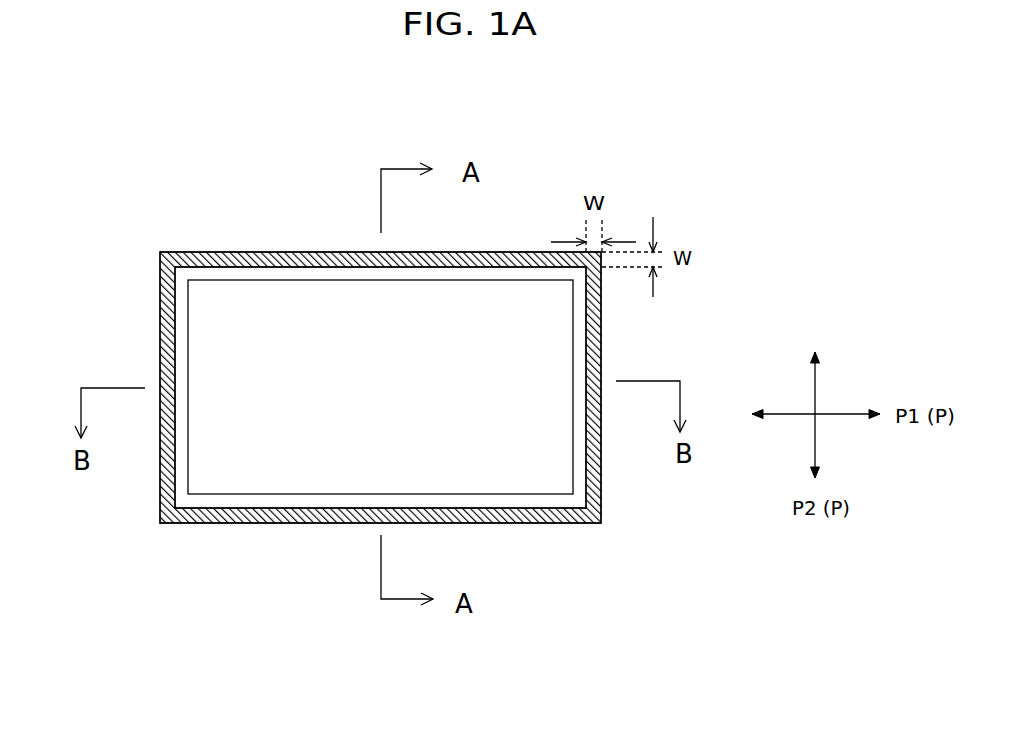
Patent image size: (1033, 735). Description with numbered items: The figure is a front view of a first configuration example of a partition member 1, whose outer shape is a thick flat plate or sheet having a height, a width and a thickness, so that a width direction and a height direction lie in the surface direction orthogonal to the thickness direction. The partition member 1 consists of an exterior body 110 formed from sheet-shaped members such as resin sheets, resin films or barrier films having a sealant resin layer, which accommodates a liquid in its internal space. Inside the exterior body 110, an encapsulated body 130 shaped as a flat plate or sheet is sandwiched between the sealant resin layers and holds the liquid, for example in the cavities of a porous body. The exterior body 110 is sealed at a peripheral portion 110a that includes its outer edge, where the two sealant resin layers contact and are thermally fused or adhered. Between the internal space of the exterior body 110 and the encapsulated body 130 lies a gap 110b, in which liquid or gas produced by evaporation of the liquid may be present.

The partition member 1 is at (434, 339).
The exterior body 110 is at (380, 388).
The peripheral portion 110a is at (227, 260).
The gap 110b is at (322, 275).
The encapsulated body 130 is at (547, 362).